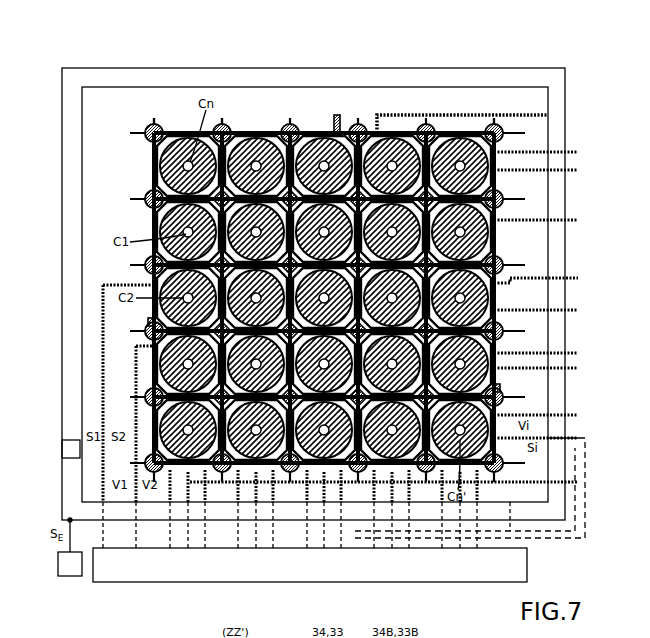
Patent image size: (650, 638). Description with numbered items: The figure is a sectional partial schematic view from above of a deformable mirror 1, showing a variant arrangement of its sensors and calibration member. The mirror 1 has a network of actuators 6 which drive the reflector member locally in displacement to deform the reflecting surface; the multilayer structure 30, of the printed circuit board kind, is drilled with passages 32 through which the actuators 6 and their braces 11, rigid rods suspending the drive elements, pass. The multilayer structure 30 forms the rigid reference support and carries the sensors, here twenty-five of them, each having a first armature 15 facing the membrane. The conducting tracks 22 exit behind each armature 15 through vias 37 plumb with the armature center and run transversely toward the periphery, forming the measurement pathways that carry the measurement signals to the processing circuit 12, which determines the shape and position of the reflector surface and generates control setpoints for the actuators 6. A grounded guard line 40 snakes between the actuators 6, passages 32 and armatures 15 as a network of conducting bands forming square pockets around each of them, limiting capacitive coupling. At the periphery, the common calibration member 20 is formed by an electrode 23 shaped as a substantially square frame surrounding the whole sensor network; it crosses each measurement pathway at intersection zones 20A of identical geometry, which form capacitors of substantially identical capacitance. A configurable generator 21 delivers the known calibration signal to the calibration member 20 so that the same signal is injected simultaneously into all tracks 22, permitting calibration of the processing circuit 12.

The mirror 1 is at (150, 62).
The common calibration member 20 is at (213, 86).
The multilayer structure 30 is at (400, 112).
The actuator 6 is at (497, 472).
The passage 32 is at (146, 202).
The brace 11 is at (490, 470).
The via 37 is at (497, 392).
The guard line 40 is at (170, 226).
The first armature 15 is at (432, 466).
The conducting track 22 is at (180, 534).
The electrode 23 is at (71, 449).
The generator 21 is at (70, 547).
The processing circuit 12 is at (304, 573).
The intersection zone 20A is at (136, 512).